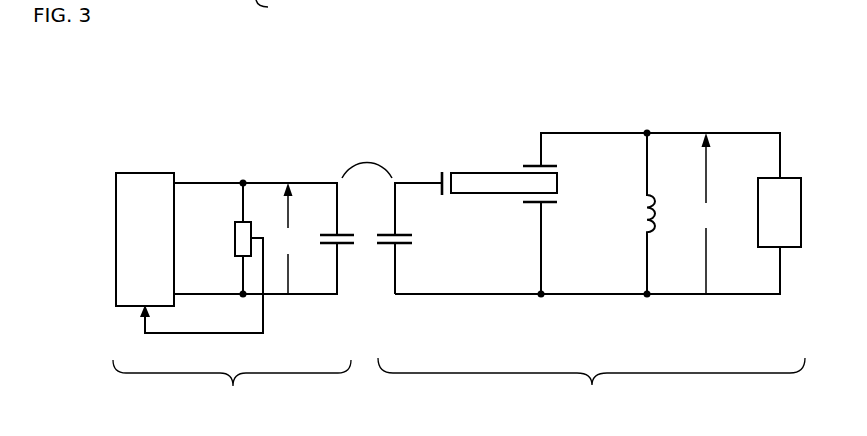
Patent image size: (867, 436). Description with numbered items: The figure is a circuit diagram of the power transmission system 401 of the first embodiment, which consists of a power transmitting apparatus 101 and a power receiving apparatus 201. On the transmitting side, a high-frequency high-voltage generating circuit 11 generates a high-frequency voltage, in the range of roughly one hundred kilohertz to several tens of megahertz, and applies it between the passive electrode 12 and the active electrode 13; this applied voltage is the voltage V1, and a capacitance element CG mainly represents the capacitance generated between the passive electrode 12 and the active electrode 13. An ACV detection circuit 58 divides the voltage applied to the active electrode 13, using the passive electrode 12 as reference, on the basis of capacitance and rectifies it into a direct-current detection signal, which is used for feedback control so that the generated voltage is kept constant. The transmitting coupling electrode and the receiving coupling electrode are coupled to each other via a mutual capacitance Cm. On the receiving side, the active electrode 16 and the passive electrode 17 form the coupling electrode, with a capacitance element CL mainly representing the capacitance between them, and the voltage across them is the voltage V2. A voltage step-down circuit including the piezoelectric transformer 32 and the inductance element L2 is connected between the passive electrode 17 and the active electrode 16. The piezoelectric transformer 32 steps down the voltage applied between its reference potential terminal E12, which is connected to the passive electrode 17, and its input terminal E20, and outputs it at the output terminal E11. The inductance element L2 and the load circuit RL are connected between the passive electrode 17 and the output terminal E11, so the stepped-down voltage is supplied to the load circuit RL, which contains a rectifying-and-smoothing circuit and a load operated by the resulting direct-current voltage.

The high-frequency high-voltage generating circuit 11 is at (128, 238).
The ACV detection circuit 58 is at (237, 238).
The active electrode 13 is at (330, 230).
The passive electrode 12 is at (330, 247).
The active electrode 16 is at (413, 234).
The passive electrode 17 is at (408, 244).
The piezoelectric transformer 32 is at (489, 157).
The input terminal E20 is at (442, 171).
The output terminal E11 is at (533, 161).
The reference potential terminal E12 is at (535, 204).
The inductance element L2 is at (636, 213).
The load circuit RL is at (793, 215).
The capacitance element CG is at (336, 238).
The capacitance element CL is at (419, 243).
The mutual capacitance Cm is at (367, 159).
The voltage V1 is at (287, 238).
The voltage V2 is at (705, 213).
The power transmitting apparatus 101 is at (216, 295).
The power receiving apparatus 201 is at (612, 254).
The power transmission system 401 is at (773, 55).